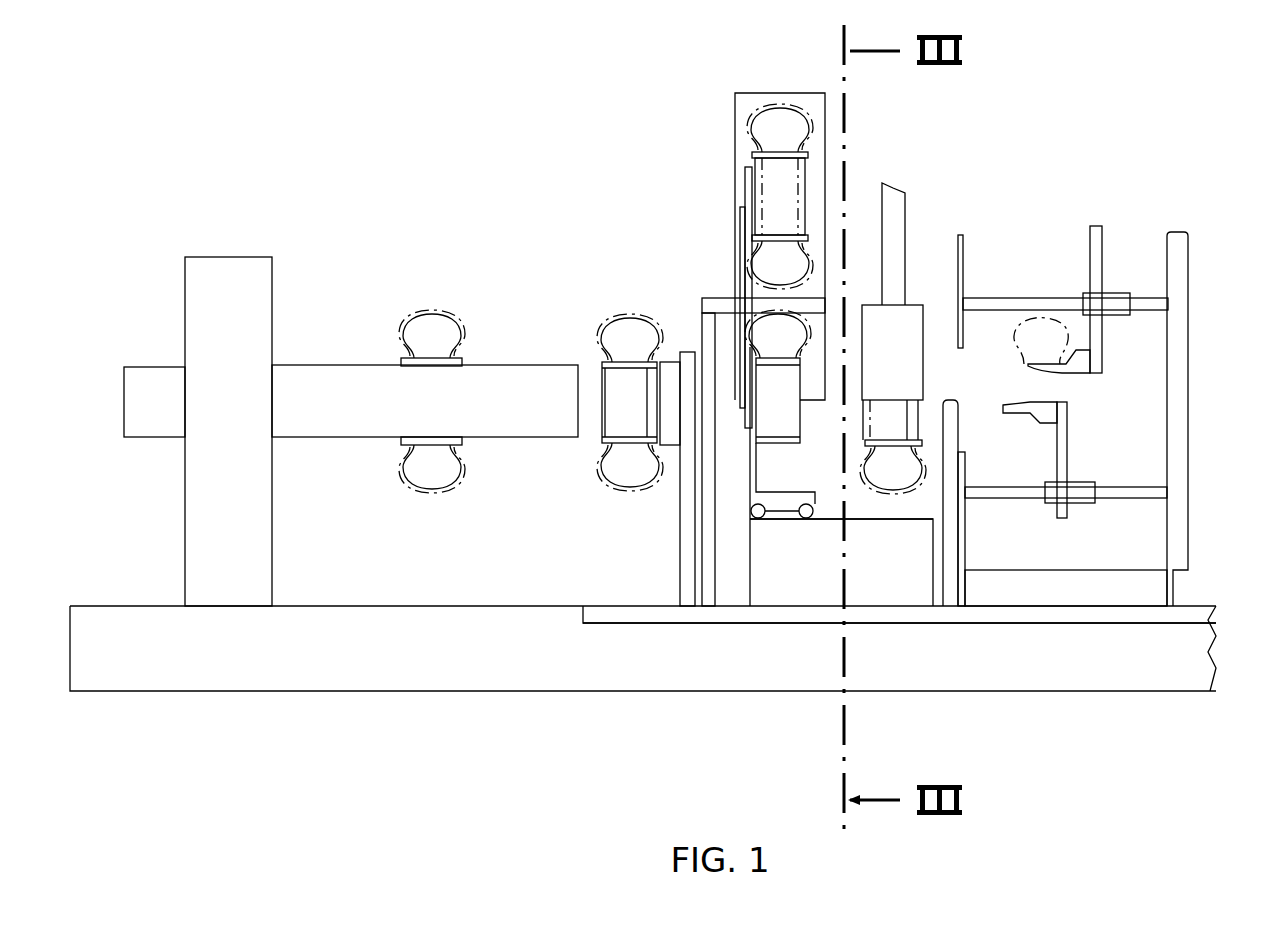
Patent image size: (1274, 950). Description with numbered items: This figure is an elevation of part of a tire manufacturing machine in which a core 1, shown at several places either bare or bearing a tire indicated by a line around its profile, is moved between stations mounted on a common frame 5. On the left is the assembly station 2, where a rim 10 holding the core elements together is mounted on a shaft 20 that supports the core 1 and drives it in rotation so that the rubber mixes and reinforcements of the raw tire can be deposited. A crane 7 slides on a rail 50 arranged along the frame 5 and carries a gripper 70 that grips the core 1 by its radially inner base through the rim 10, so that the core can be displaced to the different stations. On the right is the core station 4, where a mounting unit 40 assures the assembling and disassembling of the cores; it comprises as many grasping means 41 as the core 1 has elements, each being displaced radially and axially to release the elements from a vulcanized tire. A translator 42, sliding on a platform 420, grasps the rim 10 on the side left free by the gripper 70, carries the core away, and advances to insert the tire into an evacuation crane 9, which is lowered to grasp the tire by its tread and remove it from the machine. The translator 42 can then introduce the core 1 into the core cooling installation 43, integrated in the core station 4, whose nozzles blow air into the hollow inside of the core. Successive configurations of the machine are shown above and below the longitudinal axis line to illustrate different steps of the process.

The core 1 is at (425, 330).
The assembly station 2 is at (318, 238).
The core station 4 is at (924, 206).
The frame 5 is at (1030, 670).
The crane 7 is at (687, 598).
The evacuation crane 9 is at (877, 318).
The rim 10 is at (432, 441).
The shaft 20 is at (352, 375).
The mounting unit 40 is at (1022, 260).
The grasping means 41 is at (1080, 363).
The translator 42 is at (785, 500).
The core cooling installation 43 is at (722, 135).
The rail 50 is at (1100, 608).
The gripper 70 is at (672, 375).
The platform 420 is at (900, 588).